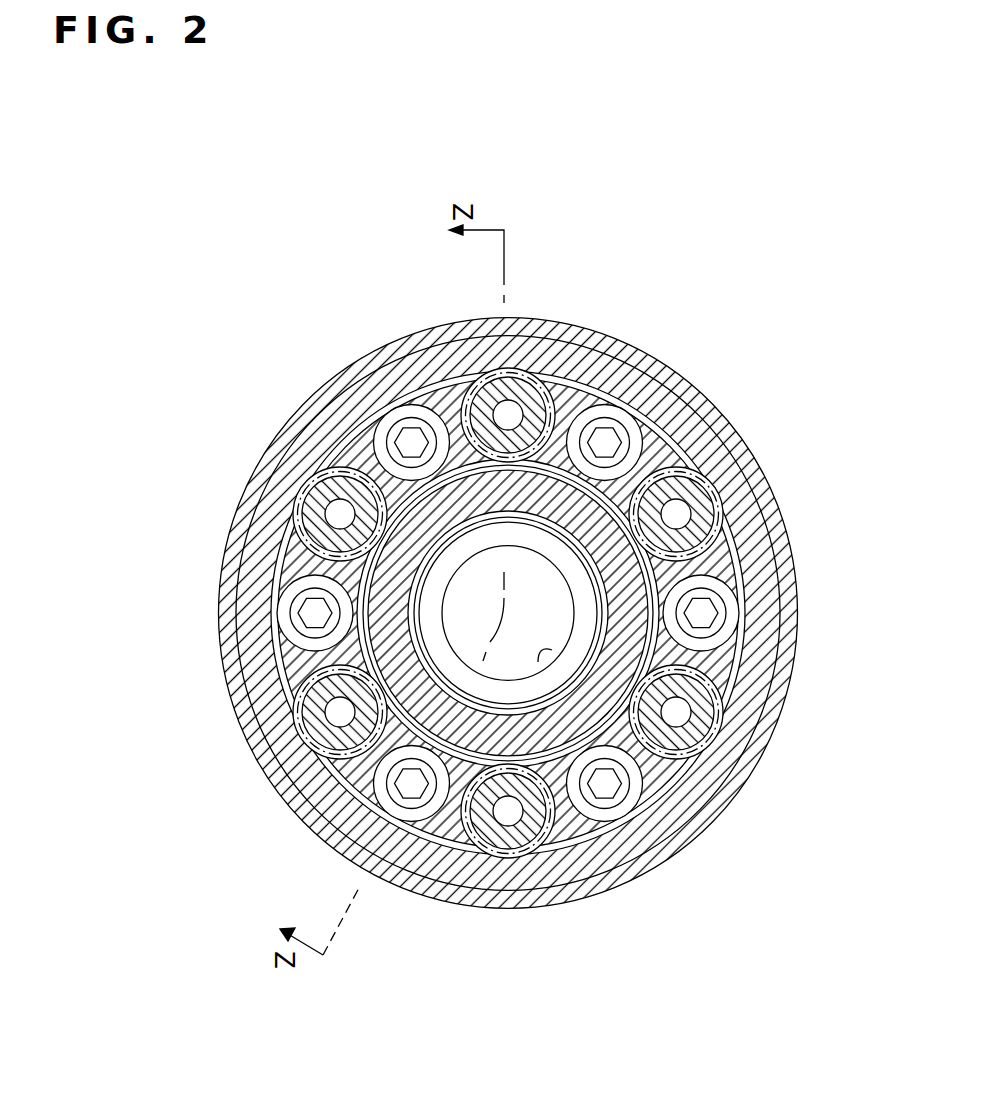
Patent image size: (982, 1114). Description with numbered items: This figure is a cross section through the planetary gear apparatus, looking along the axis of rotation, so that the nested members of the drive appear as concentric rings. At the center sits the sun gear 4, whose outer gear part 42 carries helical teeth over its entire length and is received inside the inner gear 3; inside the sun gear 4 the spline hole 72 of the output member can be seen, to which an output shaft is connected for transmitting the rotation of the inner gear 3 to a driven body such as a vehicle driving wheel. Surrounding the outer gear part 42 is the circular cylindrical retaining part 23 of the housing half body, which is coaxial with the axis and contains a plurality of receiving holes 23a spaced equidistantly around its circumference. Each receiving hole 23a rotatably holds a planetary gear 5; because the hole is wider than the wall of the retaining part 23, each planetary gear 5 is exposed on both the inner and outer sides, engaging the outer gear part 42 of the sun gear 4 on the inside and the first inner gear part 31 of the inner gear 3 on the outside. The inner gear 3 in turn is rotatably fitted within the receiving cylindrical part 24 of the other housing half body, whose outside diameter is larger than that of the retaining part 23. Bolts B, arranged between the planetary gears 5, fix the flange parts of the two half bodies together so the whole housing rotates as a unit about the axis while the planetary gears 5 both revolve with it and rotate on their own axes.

The inner gear 3 is at (722, 462).
The sun gear 4 is at (420, 520).
The planetary gear 5 is at (528, 392).
The retaining part 23 is at (718, 412).
The receiving hole 23a is at (478, 406).
The receiving cylindrical part 24 is at (611, 337).
The first inner gear part 31 is at (716, 663).
The outer gear part 42 is at (470, 394).
The spline hole 72 is at (548, 648).
The bolt B is at (634, 410).